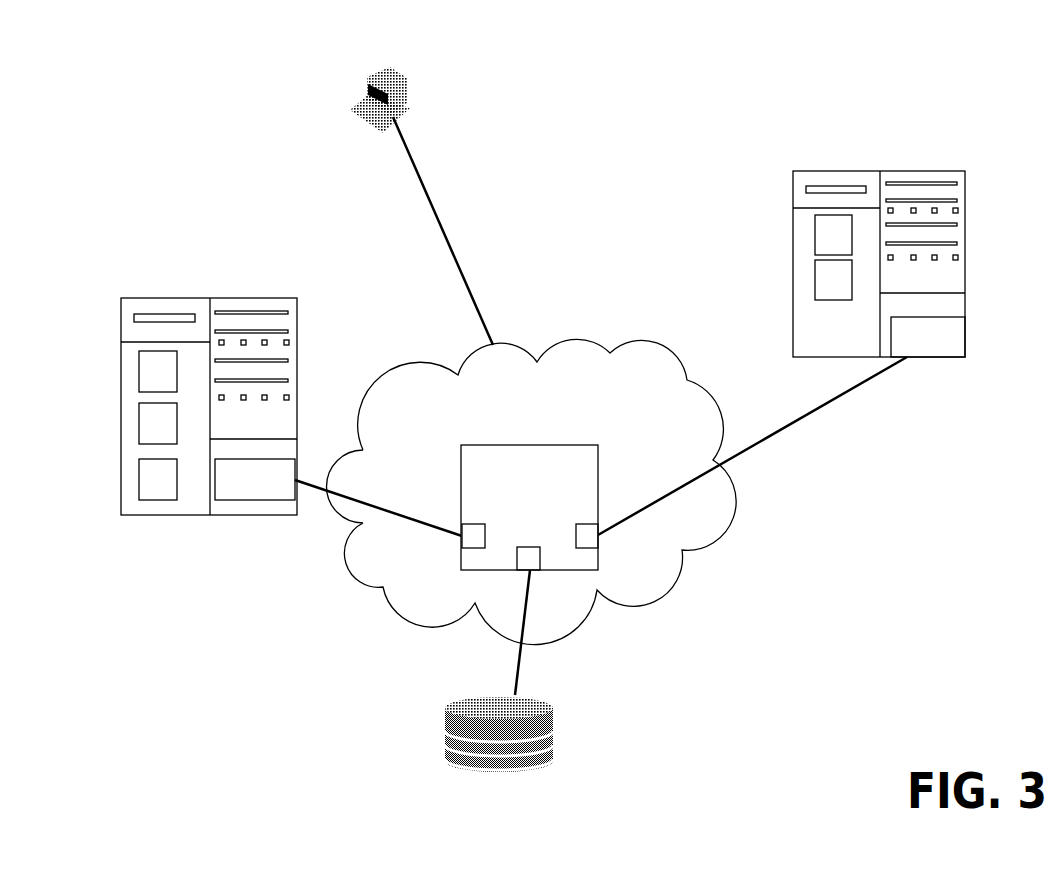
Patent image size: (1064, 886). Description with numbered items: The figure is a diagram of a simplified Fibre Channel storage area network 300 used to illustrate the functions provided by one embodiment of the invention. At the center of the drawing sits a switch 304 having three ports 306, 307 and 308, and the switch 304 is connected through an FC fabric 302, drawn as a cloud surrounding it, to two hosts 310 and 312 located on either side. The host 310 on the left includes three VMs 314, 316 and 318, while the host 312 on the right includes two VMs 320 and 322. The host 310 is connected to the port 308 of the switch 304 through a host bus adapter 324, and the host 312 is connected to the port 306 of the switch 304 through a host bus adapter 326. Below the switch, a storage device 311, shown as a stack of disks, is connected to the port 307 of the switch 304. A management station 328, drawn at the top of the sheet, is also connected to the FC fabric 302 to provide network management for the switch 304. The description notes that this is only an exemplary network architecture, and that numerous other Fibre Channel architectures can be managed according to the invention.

The network 300 is at (826, 88).
The FC fabric 302 is at (688, 352).
The switch 304 is at (535, 537).
The port 306 is at (588, 522).
The port 307 is at (540, 570).
The port 308 is at (475, 522).
The host 310 is at (180, 409).
The storage device 311 is at (537, 767).
The host 312 is at (871, 251).
The VM 314 is at (139, 376).
The VM 316 is at (139, 431).
The VM 318 is at (139, 485).
The VM 320 is at (815, 235).
The VM 322 is at (815, 282).
The host bus adapter 324 is at (262, 500).
The host bus adapter 326 is at (965, 325).
The management station 328 is at (388, 63).